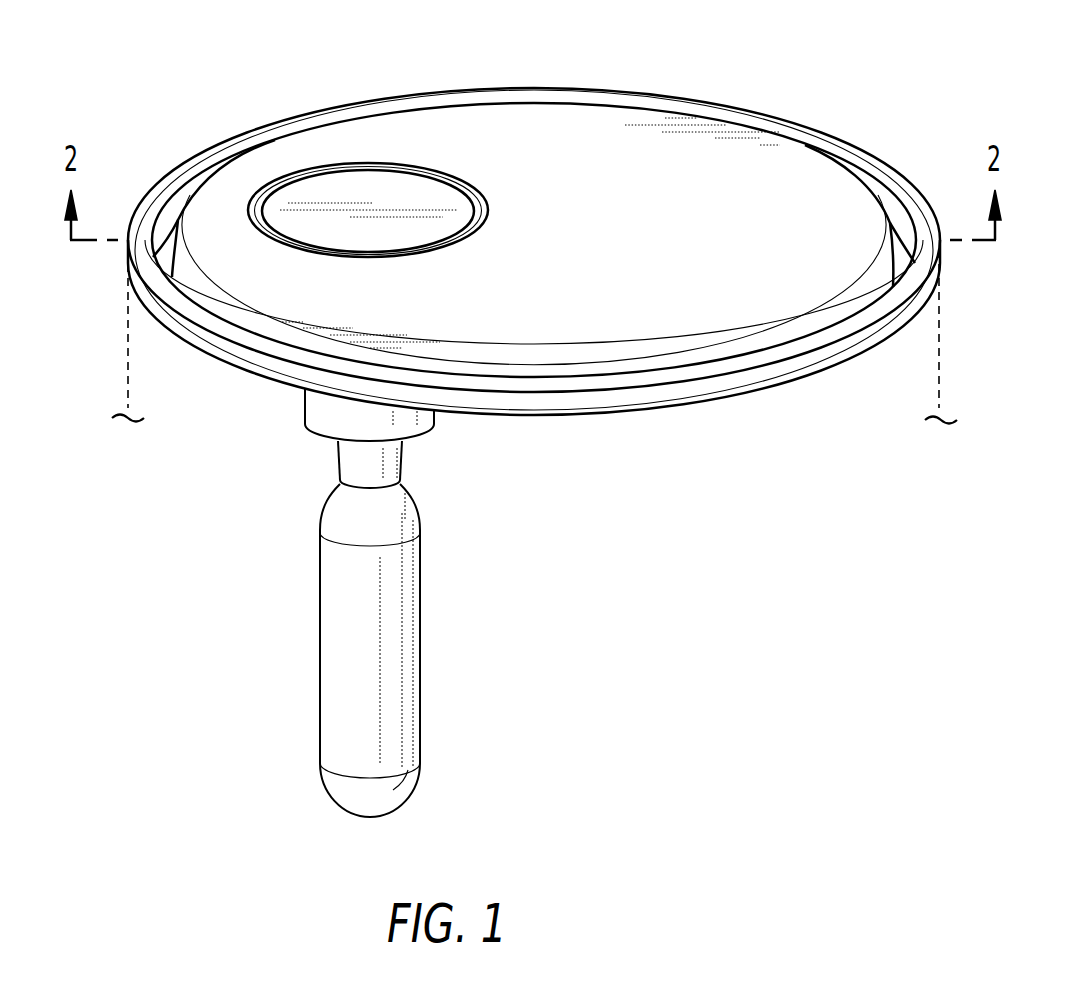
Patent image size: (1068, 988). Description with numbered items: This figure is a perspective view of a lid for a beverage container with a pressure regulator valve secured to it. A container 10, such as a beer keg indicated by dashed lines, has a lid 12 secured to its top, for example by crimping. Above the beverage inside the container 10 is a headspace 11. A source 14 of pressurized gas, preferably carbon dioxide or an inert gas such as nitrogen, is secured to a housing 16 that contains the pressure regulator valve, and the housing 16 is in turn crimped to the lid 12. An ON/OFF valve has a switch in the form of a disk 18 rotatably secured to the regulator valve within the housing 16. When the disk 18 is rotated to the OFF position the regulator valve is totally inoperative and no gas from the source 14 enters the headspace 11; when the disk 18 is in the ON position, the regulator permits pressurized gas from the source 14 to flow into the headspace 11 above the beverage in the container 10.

The container 10 is at (128, 330).
The headspace 11 is at (500, 498).
The lid 12 is at (590, 137).
The source of pressurized gas 14 is at (422, 645).
The housing 16 is at (317, 420).
The disk 18 is at (312, 193).